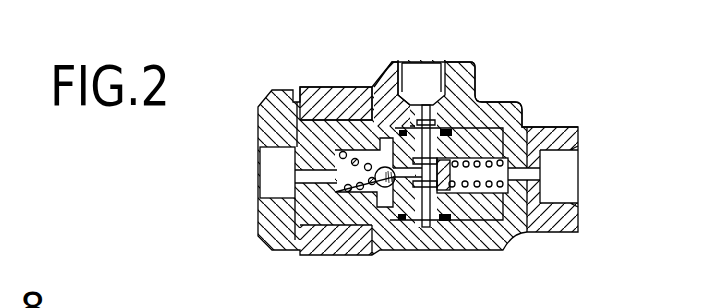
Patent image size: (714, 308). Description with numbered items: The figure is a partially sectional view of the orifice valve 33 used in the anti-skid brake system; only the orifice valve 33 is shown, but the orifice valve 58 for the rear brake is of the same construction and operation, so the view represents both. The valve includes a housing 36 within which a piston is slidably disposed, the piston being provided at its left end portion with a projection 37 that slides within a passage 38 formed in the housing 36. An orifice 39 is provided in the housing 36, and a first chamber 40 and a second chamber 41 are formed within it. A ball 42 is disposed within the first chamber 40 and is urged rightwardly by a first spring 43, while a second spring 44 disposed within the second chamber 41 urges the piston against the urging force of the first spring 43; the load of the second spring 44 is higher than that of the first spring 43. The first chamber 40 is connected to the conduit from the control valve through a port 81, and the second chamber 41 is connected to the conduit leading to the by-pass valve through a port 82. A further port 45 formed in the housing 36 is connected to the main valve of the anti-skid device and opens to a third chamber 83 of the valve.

The orifice valve 33 is at (381, 146).
The orifice valve 58 is at (318, 78).
The projection 37 is at (400, 138).
The passage 38 is at (392, 75).
The port 45 is at (427, 75).
The third chamber 83 is at (470, 102).
The second spring 44 is at (517, 128).
The port 81 is at (275, 180).
The port 82 is at (562, 178).
The first chamber 40 is at (340, 183).
The first spring 43 is at (358, 192).
The ball 42 is at (386, 190).
The orifice 39 is at (442, 192).
The housing 36 is at (477, 195).
The second chamber 41 is at (508, 188).